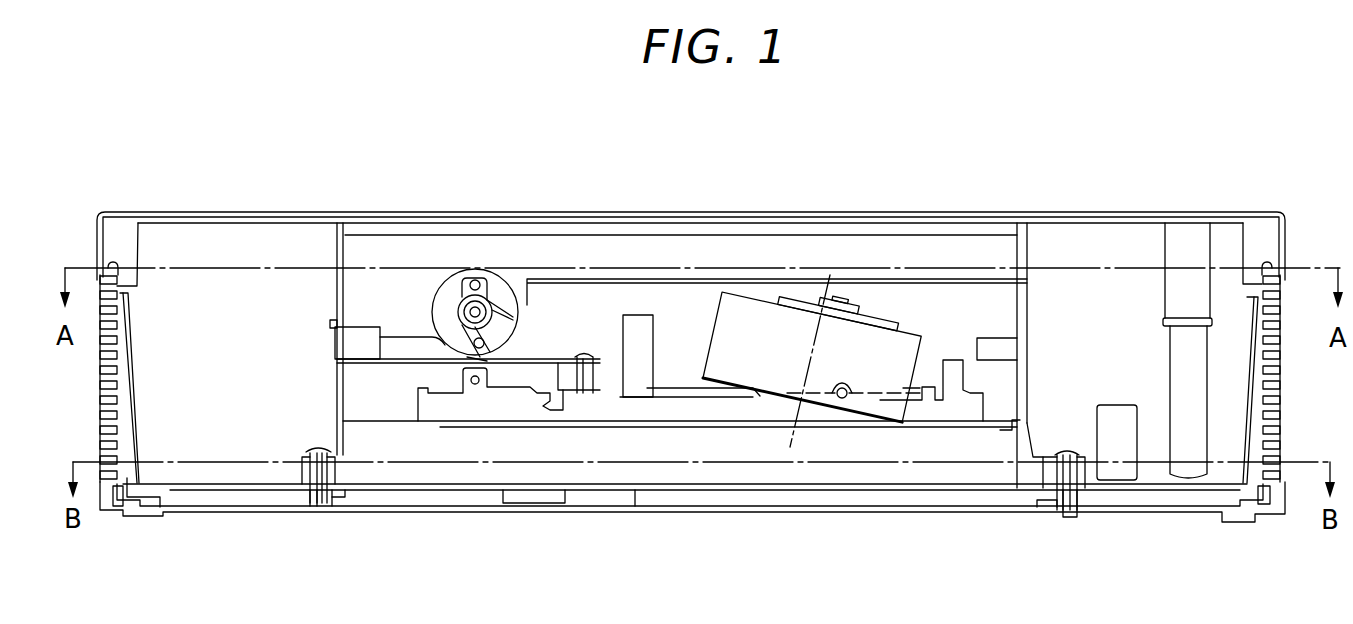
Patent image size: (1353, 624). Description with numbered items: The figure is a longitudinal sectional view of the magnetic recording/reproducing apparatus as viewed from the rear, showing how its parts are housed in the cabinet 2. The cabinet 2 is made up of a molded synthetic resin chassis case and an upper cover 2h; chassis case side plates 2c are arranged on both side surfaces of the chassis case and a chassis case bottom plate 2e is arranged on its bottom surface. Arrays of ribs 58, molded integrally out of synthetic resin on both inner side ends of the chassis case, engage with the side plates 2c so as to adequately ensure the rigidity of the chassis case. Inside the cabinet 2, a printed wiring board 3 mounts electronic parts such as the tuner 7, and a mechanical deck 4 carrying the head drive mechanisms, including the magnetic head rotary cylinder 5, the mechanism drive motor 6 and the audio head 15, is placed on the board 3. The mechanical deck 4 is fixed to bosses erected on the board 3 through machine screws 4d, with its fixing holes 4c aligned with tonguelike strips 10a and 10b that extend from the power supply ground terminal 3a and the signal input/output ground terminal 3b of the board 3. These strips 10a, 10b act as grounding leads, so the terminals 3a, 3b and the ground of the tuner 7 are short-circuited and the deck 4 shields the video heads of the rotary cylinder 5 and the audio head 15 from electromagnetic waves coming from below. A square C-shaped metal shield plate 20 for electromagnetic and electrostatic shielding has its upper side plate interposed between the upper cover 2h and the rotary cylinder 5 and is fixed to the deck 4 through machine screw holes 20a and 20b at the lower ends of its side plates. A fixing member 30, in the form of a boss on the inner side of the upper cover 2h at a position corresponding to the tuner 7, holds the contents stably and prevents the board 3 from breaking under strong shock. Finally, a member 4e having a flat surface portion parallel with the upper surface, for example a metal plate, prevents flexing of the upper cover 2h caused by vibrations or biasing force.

The cabinet 2 is at (696, 348).
The chassis case side plates 2c is at (100, 378).
The chassis case bottom plate 2e is at (730, 512).
The upper cover 2h is at (830, 212).
The printed wiring board 3 is at (685, 528).
The power supply ground terminal 3a is at (318, 500).
The signal input/output ground terminal 3b is at (1067, 517).
The mechanical deck 4 is at (676, 350).
The fixing holes 4c is at (306, 457).
The machine screws 4d is at (318, 448).
The member having a flat surface portion 4e is at (705, 220).
The magnetic head rotary cylinder 5 is at (715, 363).
The mechanism drive motor 6 is at (500, 290).
The tuner 7 is at (1156, 350).
The tonguelike strip 10a is at (336, 497).
The tonguelike strip 10b is at (1040, 503).
The audio head 15 is at (645, 336).
The shield plate 20 is at (777, 363).
The machine screw hole 20a is at (567, 430).
The machine screw hole 20b is at (1000, 425).
The fixing member 30 is at (1165, 307).
The arrays of ribs 58 is at (133, 419).